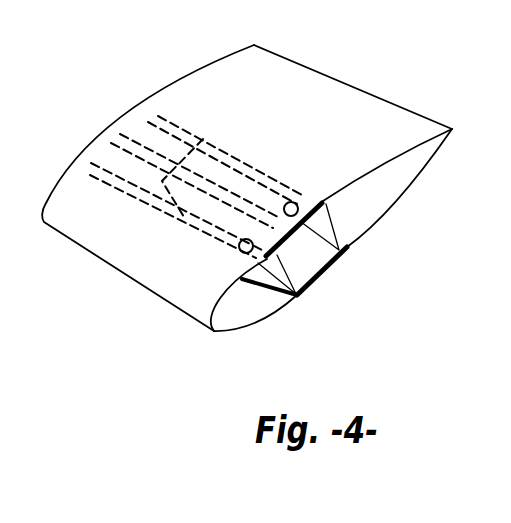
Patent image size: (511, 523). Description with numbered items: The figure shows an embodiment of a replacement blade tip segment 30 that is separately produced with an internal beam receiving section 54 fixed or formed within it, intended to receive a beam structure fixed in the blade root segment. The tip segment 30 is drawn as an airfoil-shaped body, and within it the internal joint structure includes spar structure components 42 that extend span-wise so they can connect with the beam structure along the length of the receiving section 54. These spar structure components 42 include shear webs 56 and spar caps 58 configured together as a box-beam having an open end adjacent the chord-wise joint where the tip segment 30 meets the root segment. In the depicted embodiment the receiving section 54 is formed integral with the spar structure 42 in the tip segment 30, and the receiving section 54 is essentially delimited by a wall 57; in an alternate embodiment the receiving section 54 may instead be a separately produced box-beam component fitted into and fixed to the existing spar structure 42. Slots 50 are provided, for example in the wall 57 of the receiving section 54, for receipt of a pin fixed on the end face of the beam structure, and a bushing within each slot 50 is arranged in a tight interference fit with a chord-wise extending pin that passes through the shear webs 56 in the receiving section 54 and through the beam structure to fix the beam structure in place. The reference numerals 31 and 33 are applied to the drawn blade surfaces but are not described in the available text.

The replacement blade tip segment 30 is at (302, 67).
The upper surface of airfoil 31 is at (390, 114).
The trailing edge 33 is at (419, 175).
The spar structure components 42 is at (235, 128).
The slots 50 is at (299, 203).
The receiving section 54 is at (306, 260).
The shear webs 56 is at (330, 228).
The wall 57 is at (175, 193).
The spar caps 58 is at (300, 296).